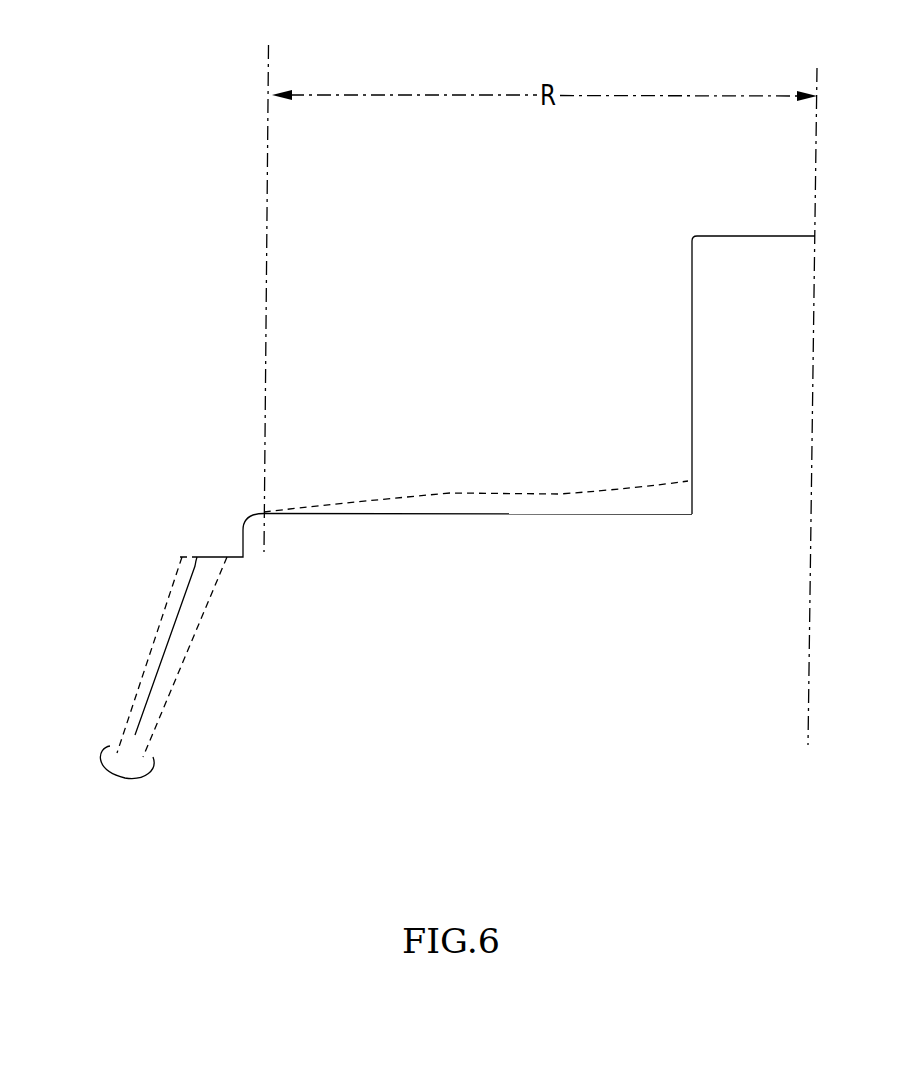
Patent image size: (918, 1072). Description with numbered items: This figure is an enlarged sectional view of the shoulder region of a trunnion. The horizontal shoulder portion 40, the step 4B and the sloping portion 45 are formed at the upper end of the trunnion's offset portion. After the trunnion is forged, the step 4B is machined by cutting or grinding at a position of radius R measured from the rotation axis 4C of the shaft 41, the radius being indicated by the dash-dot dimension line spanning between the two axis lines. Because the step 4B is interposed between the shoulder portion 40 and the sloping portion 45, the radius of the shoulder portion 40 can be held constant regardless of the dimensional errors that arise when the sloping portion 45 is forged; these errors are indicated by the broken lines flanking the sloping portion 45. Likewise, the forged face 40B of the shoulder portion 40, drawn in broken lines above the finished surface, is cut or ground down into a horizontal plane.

The step 4B is at (243, 545).
The rotation axis 4C is at (815, 198).
The horizontal shoulder portion 40 is at (455, 513).
The forged face 40B is at (568, 492).
The shaft 41 is at (690, 274).
The sloping portion 45 is at (140, 685).